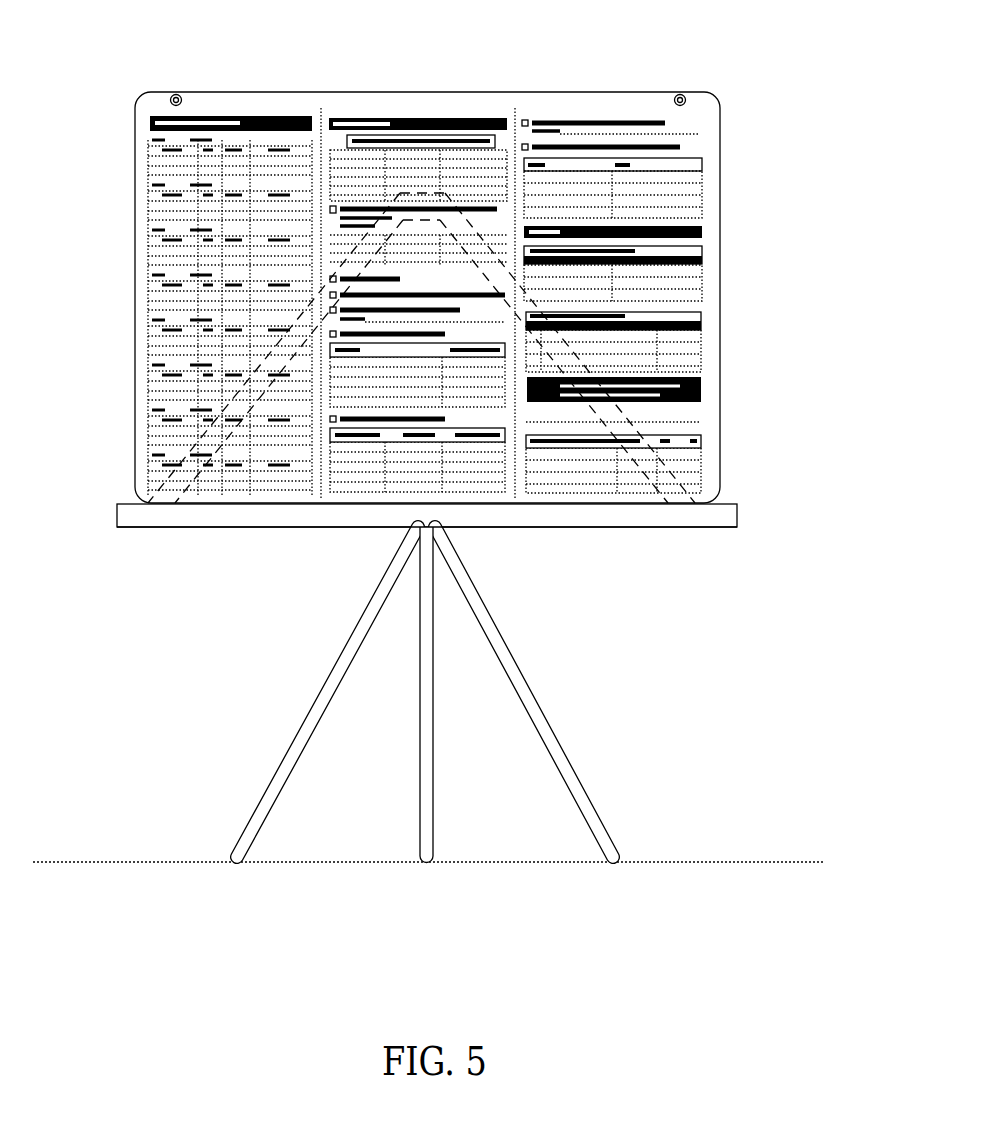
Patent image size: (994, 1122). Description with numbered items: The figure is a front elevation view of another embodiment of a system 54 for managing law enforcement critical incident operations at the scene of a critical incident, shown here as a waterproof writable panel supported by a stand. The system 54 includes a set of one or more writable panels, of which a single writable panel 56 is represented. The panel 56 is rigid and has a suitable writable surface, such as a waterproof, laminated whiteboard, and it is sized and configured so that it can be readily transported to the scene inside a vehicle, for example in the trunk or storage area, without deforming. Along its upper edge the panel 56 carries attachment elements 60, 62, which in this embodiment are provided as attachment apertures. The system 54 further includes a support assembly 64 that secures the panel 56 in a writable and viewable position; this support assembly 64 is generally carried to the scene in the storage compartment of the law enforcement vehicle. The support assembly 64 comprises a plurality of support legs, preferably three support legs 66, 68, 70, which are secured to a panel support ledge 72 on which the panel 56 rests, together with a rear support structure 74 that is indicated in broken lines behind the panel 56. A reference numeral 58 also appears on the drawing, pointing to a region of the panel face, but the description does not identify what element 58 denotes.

The system 54 is at (748, 254).
The writable panel 56 is at (720, 162).
The header panel 58 is at (690, 400).
The attachment element 60 is at (685, 94).
The attachment element 62 is at (174, 93).
The support assembly 64 is at (547, 612).
The support leg 66 is at (553, 722).
The support leg 68 is at (418, 790).
The support leg 70 is at (312, 727).
The panel support ledge 72 is at (160, 528).
The rear support structure 74 is at (265, 367).